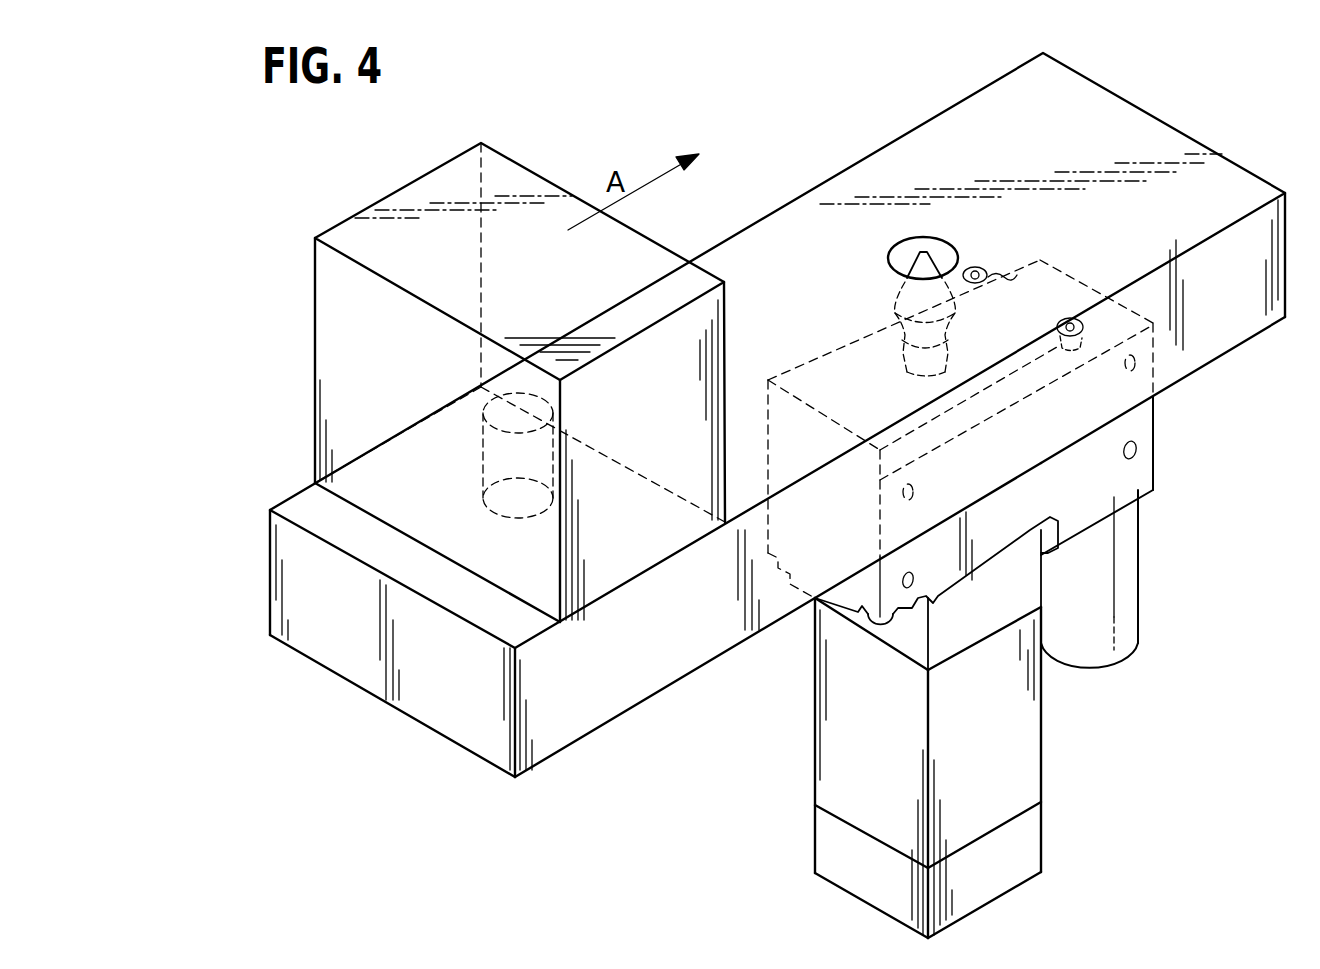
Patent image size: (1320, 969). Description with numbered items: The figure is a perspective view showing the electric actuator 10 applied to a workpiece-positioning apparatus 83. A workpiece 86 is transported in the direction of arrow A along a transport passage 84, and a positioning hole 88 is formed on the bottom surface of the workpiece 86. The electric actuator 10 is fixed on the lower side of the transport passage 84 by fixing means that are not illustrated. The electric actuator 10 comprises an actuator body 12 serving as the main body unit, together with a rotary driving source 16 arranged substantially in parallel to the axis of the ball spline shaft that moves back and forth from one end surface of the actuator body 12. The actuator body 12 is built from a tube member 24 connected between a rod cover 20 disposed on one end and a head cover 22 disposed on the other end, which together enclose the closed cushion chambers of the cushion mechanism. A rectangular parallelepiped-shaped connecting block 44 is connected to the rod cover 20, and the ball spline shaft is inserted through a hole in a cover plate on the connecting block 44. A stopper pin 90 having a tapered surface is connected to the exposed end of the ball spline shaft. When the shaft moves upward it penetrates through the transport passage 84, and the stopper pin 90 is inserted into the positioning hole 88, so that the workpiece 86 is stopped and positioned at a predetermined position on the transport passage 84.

The electric actuator 10 is at (980, 599).
The actuator body 12 is at (982, 768).
The rotary driving source 16 is at (1125, 610).
The rod cover 20 is at (1010, 583).
The head cover 22 is at (1025, 857).
The tube member 24 is at (1033, 723).
The connecting block 44 is at (1108, 470).
The workpiece-positioning apparatus 83 is at (777, 415).
The transport passage 84 is at (908, 162).
The workpiece 86 is at (348, 335).
The positioning hole 88 is at (493, 463).
The stopper pin 90 is at (930, 250).